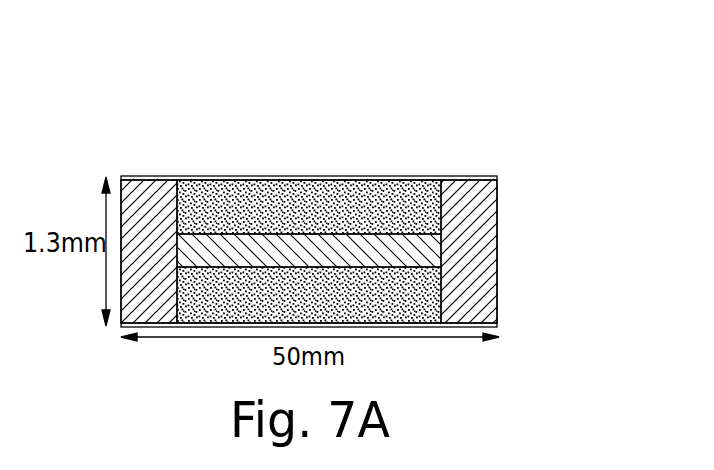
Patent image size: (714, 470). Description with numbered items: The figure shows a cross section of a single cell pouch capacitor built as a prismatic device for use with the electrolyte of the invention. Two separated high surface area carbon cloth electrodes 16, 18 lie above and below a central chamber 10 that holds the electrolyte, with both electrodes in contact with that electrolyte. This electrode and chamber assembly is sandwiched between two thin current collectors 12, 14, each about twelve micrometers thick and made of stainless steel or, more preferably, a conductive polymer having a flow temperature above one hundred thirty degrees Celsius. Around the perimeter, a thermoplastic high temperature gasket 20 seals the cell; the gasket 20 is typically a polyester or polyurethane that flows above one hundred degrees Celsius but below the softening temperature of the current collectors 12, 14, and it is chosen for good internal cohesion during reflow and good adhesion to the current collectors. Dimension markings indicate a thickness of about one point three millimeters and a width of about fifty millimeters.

The chamber 10 is at (433, 258).
The current collector 12 is at (432, 176).
The current collector 14 is at (432, 322).
The carbon cloth electrode 16 is at (212, 202).
The carbon cloth electrode 18 is at (235, 300).
The gasket 20 is at (497, 218).